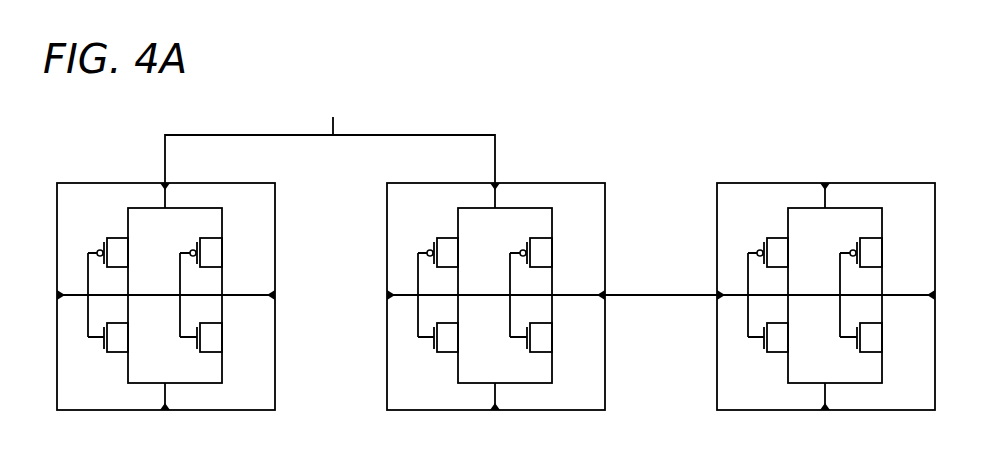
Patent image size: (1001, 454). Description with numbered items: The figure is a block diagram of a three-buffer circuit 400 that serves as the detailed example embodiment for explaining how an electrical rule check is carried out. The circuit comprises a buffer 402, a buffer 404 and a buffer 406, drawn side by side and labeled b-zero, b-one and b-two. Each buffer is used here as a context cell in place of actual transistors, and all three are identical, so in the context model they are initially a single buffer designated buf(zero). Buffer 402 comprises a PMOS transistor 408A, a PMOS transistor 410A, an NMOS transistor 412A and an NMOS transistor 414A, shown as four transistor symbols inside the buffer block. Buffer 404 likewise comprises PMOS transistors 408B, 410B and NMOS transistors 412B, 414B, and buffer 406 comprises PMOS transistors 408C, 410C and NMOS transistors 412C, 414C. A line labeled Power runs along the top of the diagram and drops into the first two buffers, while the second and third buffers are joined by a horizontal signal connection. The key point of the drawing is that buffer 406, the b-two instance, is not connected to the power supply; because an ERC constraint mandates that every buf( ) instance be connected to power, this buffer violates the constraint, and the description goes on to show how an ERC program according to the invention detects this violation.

The three-buffer circuit 400 is at (858, 104).
The buffer 402 is at (102, 402).
The buffer 404 is at (432, 402).
The buffer 406 is at (762, 402).
The PMOS transistor 408A is at (125, 252).
The PMOS transistor 410A is at (217, 252).
The NMOS transistor 412A is at (125, 337).
The NMOS transistor 414A is at (217, 337).
The PMOS transistor 408B is at (455, 252).
The PMOS transistor 410B is at (547, 252).
The NMOS transistor 412B is at (455, 337).
The NMOS transistor 414B is at (547, 337).
The PMOS transistor 408C is at (785, 252).
The PMOS transistor 410C is at (877, 252).
The NMOS transistor 412C is at (785, 337).
The NMOS transistor 414C is at (877, 337).